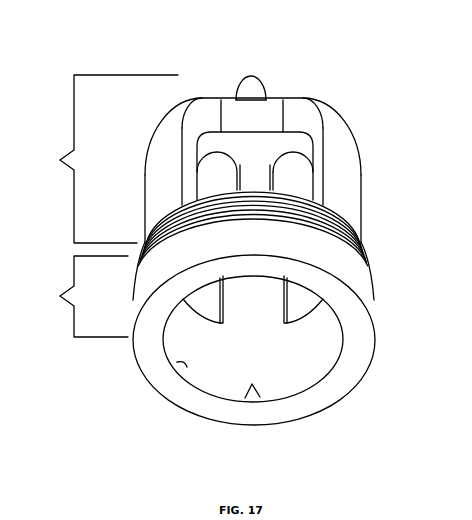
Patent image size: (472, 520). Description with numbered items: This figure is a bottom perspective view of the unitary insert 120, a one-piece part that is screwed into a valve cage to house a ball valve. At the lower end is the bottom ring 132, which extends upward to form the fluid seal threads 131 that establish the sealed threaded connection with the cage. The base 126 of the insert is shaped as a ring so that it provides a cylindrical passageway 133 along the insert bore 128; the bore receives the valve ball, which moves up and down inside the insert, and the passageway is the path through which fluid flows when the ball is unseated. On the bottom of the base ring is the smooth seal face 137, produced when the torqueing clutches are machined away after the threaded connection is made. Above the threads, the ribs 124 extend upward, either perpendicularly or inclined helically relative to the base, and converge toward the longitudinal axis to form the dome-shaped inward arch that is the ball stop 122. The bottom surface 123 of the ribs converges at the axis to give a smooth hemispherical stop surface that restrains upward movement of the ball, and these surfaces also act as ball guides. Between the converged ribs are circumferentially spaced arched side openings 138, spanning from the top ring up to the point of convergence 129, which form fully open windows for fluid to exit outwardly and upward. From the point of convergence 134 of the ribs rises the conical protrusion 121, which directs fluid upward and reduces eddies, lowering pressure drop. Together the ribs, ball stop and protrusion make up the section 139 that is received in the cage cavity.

The unitary insert 120 is at (285, 26).
The conical protrusion 121 is at (251, 78).
The ball stop 122 is at (255, 166).
The bottom surface of the ribs 123 is at (253, 299).
The ribs 124 is at (160, 187).
The base 126 is at (81, 296).
The insert bore 128 is at (186, 366).
The point of convergence 129 is at (257, 113).
The fluid seal threads 131 is at (373, 274).
The bottom ring 132 is at (377, 309).
The cylindrical passageway 133 is at (252, 384).
The point of convergence of the ribs 134 is at (245, 93).
The seal face 137 is at (352, 360).
The side openings 138 is at (253, 237).
The ribs, ball stop and conical protrusion forming section 139 is at (106, 159).